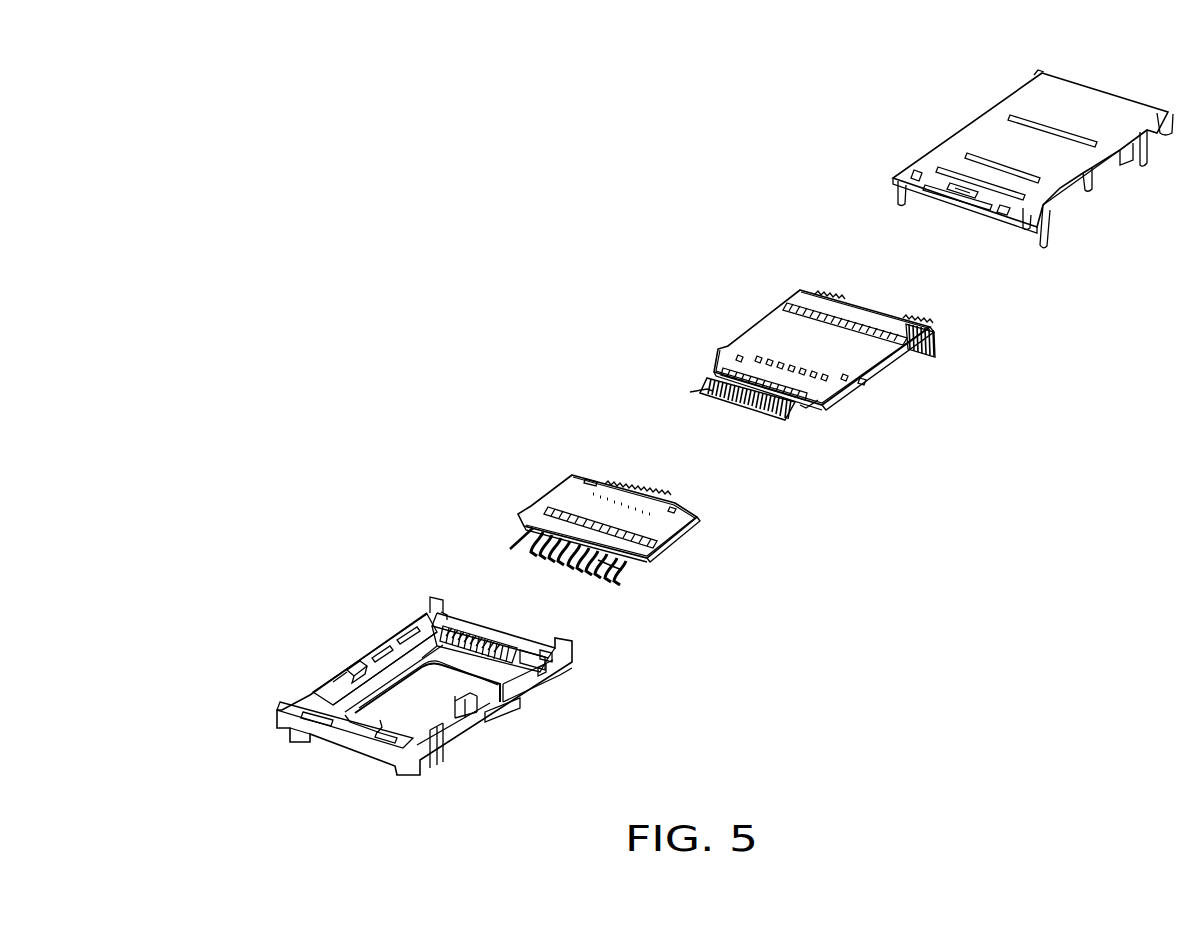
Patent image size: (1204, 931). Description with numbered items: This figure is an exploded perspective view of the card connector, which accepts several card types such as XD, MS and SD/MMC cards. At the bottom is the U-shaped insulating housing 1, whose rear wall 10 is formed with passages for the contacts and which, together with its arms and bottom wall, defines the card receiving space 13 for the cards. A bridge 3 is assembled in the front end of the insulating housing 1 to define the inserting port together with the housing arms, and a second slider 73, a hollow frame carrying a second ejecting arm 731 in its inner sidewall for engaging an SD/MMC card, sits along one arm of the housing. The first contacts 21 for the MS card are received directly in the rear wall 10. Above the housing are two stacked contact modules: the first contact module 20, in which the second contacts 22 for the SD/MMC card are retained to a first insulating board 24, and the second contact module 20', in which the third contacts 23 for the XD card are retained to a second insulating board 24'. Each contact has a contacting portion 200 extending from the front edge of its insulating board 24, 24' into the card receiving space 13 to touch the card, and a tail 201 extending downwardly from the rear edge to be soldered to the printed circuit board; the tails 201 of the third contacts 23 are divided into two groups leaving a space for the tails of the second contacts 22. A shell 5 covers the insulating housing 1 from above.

The insulating housing 1 is at (533, 685).
The bridge 3 is at (362, 732).
The shell 5 is at (1093, 108).
The rear wall 10 is at (513, 637).
The card receiving space 13 is at (445, 703).
The first contact module 20 is at (660, 571).
The second contact module 20' is at (908, 349).
The first contacts 21 is at (487, 635).
The second contacts 22 is at (612, 568).
The third contacts 23 is at (703, 393).
The first insulating board 24 is at (657, 516).
The second insulating board 24' is at (844, 397).
The second slider 73 is at (373, 655).
The second ejecting arm 731 is at (337, 680).
The contacting portion 200 is at (715, 395).
The tail 201 is at (827, 290).